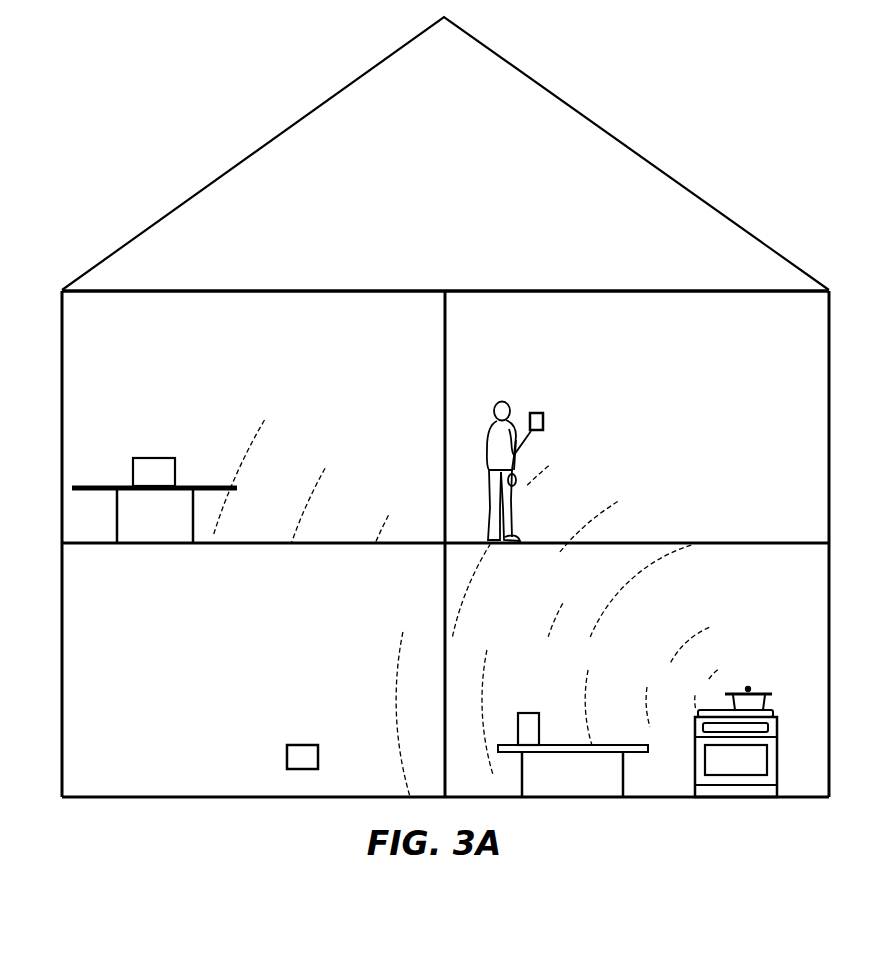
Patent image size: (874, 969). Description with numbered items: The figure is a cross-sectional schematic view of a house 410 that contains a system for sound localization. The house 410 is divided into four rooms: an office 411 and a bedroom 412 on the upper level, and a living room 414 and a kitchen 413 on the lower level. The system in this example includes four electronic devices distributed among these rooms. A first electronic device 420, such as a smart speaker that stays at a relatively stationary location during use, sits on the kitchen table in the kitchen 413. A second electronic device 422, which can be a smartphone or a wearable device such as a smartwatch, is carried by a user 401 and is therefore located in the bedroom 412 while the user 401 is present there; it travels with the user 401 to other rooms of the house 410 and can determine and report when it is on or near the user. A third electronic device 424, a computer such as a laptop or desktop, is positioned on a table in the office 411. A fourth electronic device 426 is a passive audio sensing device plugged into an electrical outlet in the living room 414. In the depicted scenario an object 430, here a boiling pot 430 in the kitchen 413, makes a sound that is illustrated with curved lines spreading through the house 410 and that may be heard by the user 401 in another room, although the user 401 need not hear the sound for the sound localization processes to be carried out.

The house 410 is at (175, 171).
The room (office) 411 is at (239, 354).
The room (bedroom) 412 is at (674, 419).
The room (kitchen) 413 is at (714, 606).
The room (living room) 414 is at (197, 657).
The user 401 is at (505, 400).
The second electronic device 422 is at (536, 412).
The third electronic device 424 is at (155, 457).
The fourth electronic device (passive audio sensing device) 426 is at (305, 743).
The first electronic device 420 is at (530, 712).
The boiling pot (object) 430 is at (757, 687).